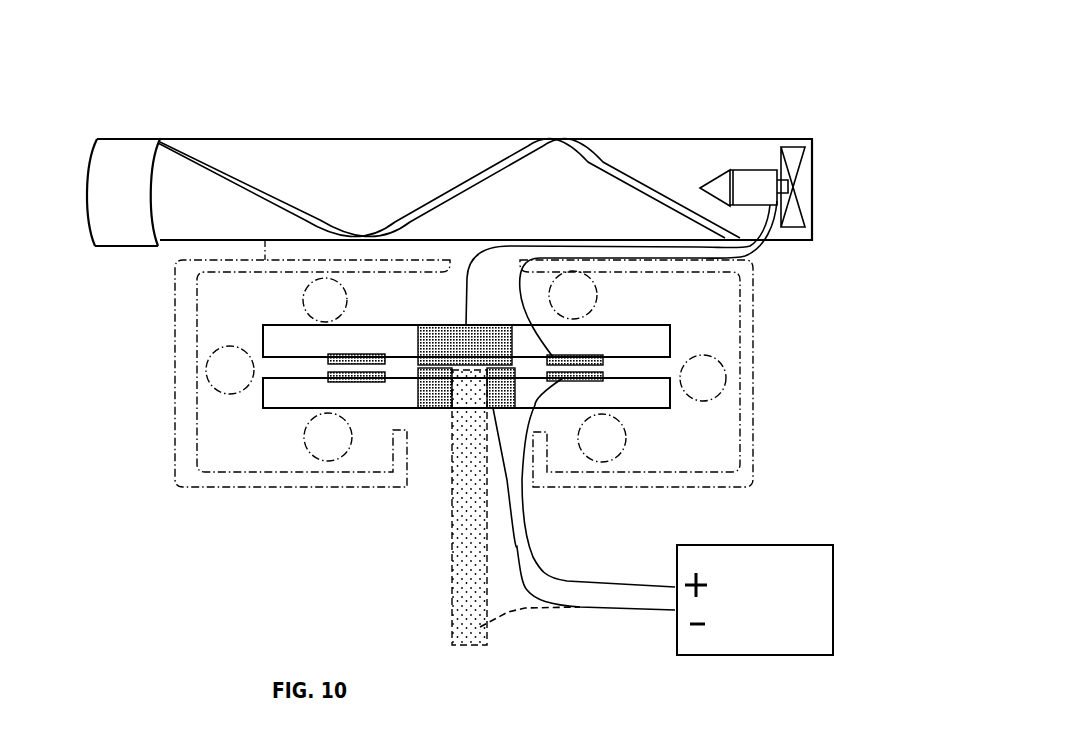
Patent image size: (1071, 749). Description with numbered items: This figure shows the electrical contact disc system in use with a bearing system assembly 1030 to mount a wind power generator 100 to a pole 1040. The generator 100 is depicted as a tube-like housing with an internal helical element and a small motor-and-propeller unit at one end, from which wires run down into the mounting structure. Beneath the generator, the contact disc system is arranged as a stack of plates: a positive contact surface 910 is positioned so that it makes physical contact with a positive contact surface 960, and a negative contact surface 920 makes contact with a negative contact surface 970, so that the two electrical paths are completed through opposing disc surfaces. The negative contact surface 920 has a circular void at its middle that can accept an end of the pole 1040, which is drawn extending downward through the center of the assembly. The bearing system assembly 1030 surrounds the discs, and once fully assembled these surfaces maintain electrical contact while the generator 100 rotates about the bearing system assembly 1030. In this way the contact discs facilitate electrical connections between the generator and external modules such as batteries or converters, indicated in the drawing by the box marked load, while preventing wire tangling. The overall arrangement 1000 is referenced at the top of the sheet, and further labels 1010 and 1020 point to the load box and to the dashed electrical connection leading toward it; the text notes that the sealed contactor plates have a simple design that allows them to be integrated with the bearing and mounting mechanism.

The wind power generator 100 is at (325, 157).
The positive contact surface 910 is at (333, 380).
The negative contact surface 920 is at (437, 410).
The positive contact surface 960 is at (350, 357).
The negative contact surface 970 is at (430, 337).
The energy harvesting system 1000 is at (792, 57).
The load 1010 is at (825, 577).
The electrical connection 1020 is at (530, 608).
The bearing system assembly 1030 is at (755, 365).
The pole 1040 is at (463, 597).